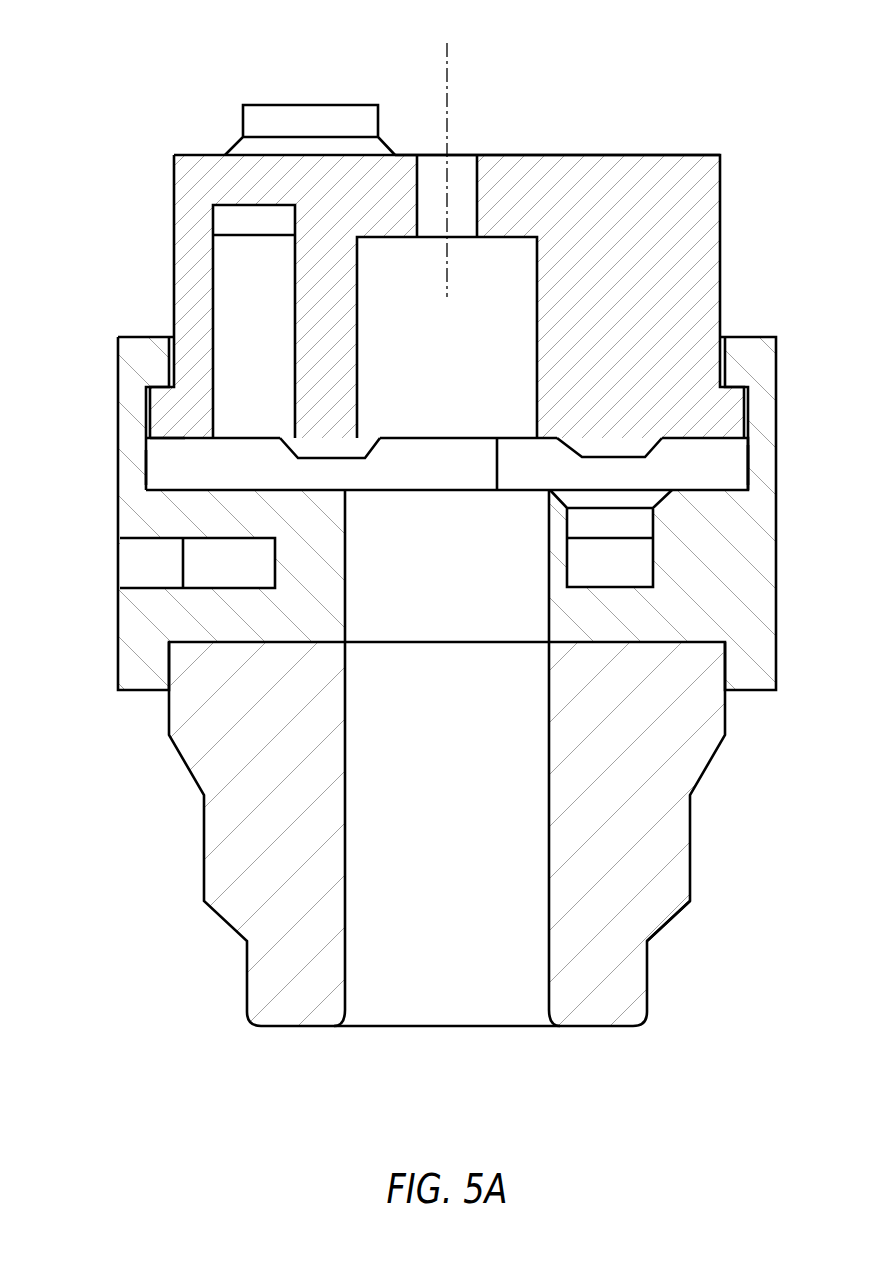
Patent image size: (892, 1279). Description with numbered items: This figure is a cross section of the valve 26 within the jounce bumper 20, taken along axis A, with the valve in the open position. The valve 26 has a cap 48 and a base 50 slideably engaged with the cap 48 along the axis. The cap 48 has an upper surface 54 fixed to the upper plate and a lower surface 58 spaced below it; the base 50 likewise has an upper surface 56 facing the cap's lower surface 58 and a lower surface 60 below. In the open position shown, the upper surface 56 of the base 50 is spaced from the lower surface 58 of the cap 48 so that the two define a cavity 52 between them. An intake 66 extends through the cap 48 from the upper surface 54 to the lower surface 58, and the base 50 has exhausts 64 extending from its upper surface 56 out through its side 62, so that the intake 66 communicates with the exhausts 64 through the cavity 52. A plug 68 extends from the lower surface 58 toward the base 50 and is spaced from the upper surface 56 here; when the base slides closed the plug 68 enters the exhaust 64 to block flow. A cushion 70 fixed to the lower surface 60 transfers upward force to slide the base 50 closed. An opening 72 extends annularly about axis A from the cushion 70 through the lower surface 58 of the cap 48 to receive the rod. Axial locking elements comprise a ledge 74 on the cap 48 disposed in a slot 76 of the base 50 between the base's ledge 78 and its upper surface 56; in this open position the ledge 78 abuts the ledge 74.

The jounce bumper 20 is at (130, 72).
The valve 26 is at (113, 407).
The cap 48 is at (174, 185).
The base 50 is at (118, 503).
The cavity 52 is at (714, 460).
The upper surface of the cap 54 is at (650, 155).
The upper surface of the base 56 is at (330, 490).
The lower surface of the cap 58 is at (547, 440).
The lower surface of the base 60 is at (655, 642).
The side 62 is at (717, 567).
The exhaust 64 is at (160, 538).
The intake 66 is at (260, 105).
The plug 68 is at (582, 457).
The cushion 70 is at (671, 917).
The opening 72 is at (488, 983).
The ledge of the cap 74 is at (166, 440).
The slot 76 is at (165, 467).
The ledge of the base 78 is at (132, 337).